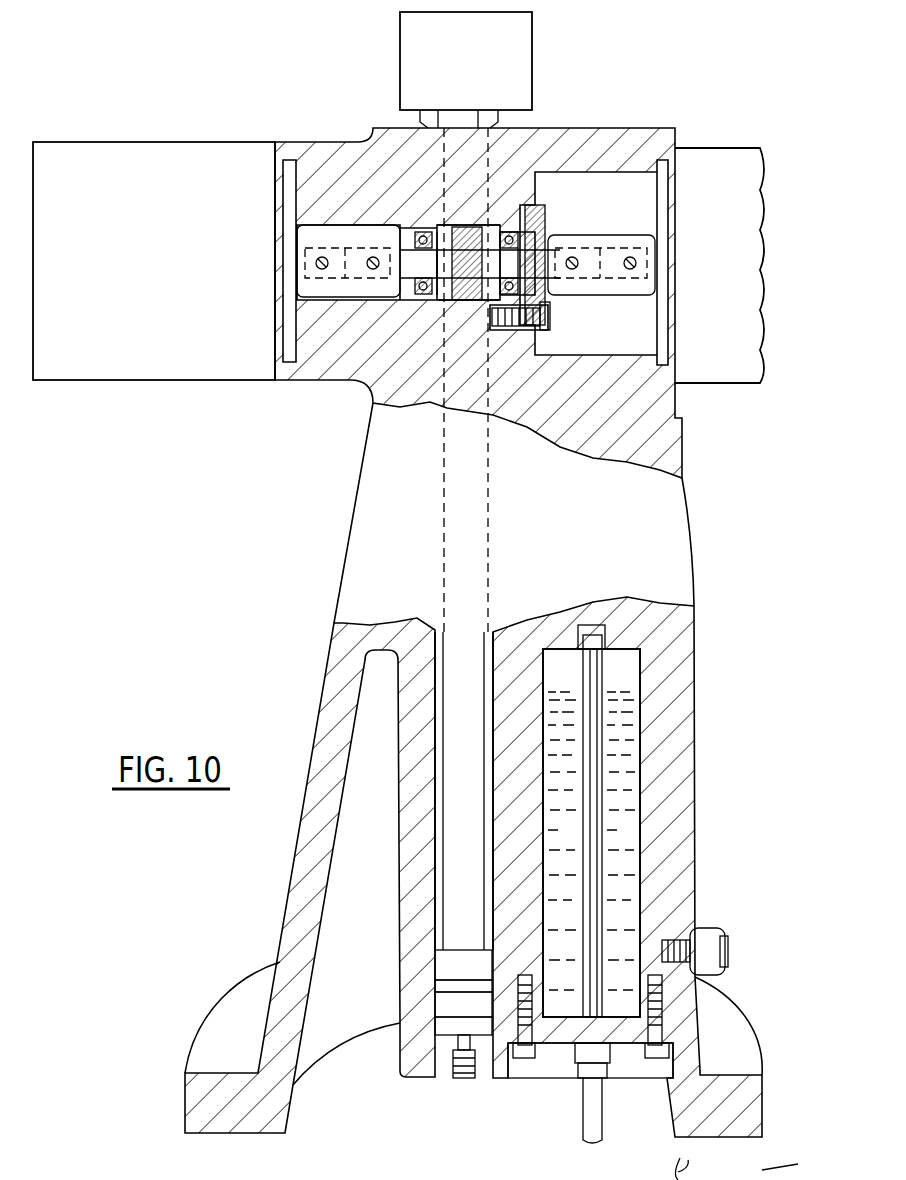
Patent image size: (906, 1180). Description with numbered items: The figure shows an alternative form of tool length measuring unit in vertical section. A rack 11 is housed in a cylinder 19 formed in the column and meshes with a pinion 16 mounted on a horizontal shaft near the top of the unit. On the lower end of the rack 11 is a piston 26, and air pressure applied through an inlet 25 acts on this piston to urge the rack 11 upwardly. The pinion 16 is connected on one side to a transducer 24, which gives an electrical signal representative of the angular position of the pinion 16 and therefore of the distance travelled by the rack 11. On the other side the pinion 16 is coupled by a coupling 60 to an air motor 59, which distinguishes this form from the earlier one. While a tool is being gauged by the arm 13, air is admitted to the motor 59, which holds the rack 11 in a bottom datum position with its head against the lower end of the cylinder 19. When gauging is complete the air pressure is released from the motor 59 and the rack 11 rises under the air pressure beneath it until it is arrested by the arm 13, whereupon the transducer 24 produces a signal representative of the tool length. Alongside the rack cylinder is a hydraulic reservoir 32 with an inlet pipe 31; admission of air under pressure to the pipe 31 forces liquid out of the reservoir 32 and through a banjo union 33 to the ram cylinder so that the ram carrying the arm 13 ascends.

The rack 11 is at (458, 822).
The arm 13 is at (522, 50).
The pinion 16 is at (450, 230).
The cylinder 19 is at (438, 848).
The transducer 24 is at (722, 362).
The inlet 25 is at (465, 1065).
The piston 26 is at (450, 965).
The inlet pipe 31 is at (595, 755).
The hydraulic reservoir 32 is at (620, 672).
The banjo union 33 is at (705, 935).
The air motor 59 is at (168, 362).
The coupling 60 is at (345, 240).